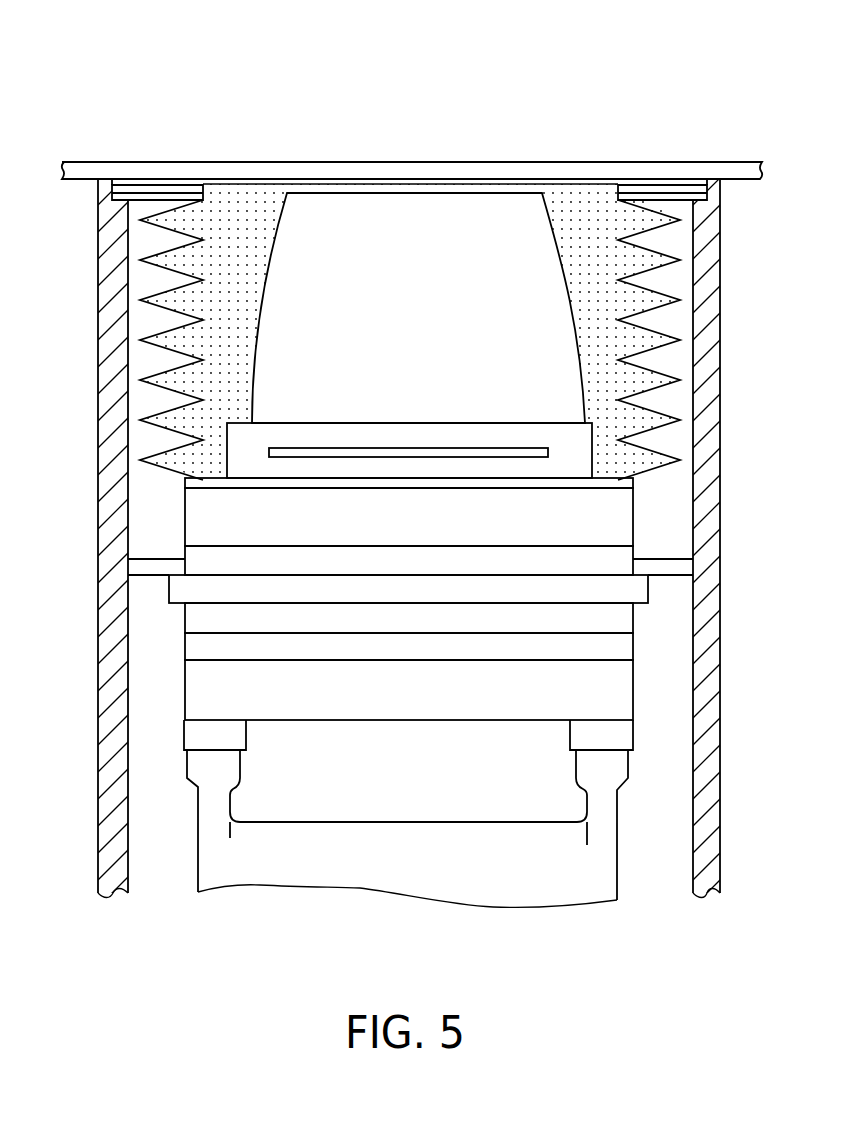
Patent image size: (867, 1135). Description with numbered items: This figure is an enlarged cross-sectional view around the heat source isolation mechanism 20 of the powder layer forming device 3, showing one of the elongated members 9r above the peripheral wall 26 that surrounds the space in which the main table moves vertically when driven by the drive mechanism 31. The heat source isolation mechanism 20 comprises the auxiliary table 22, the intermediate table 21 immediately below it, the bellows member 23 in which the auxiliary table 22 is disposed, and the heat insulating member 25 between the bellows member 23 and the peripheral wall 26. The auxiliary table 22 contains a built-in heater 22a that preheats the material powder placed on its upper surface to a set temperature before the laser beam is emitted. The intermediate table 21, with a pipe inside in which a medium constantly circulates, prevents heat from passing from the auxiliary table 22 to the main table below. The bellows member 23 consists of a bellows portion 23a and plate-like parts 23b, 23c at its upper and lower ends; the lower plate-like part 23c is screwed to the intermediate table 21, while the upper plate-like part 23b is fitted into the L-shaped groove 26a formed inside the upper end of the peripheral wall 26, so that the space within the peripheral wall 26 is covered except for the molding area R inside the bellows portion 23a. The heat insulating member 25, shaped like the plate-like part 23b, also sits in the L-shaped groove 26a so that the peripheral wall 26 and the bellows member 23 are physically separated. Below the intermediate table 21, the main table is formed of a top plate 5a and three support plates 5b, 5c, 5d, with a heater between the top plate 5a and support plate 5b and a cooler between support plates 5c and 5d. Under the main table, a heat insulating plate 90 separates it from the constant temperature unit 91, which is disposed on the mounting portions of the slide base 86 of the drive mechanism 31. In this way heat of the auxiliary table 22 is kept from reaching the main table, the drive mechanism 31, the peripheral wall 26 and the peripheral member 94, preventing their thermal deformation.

The powder layer forming device 3 is at (650, 96).
The heat source isolation mechanism 20 is at (285, 150).
The elongated member 9r is at (361, 170).
The molding area R is at (530, 175).
The peripheral wall 26 is at (115, 367).
The L-shaped groove 26a is at (112, 190).
The heat insulating member 25 is at (688, 198).
The plate-like part 23b is at (660, 190).
The bellows member 23 is at (412, 340).
The bellows portion 23a is at (170, 268).
The plate-like part 23c is at (202, 486).
The auxiliary table 22 is at (590, 447).
The heater 22a is at (287, 452).
The intermediate table 21 is at (617, 518).
The top plate 5a is at (622, 566).
The support plate 5b is at (633, 587).
The support plate 5c is at (200, 614).
The support plate 5d is at (200, 650).
The peripheral member 94 is at (143, 567).
The heat insulating plate 90 is at (200, 685).
The constant temperature unit 91 is at (193, 732).
The slide base 86 is at (605, 820).
The drive mechanism 31 is at (158, 821).